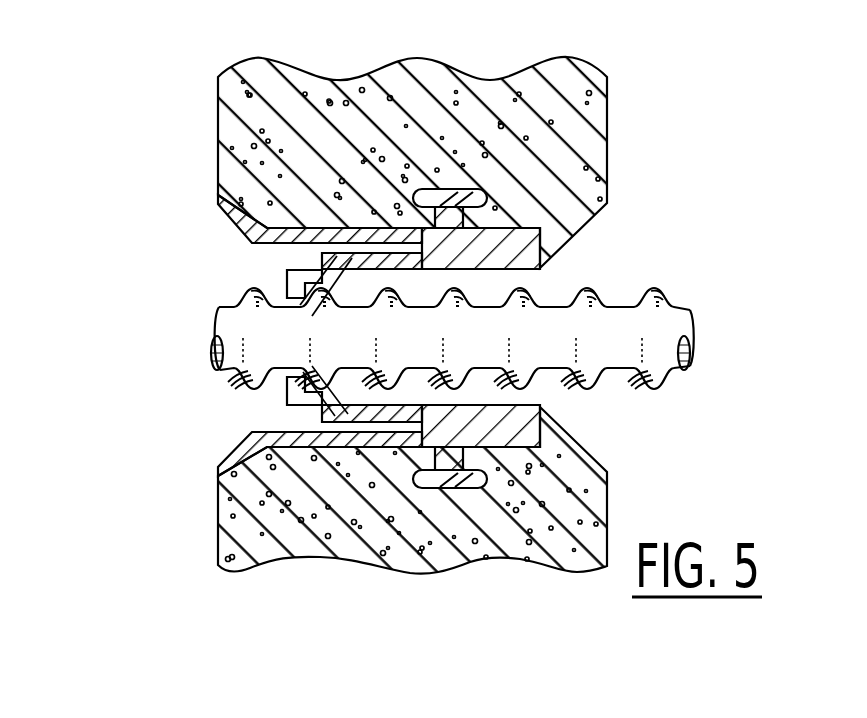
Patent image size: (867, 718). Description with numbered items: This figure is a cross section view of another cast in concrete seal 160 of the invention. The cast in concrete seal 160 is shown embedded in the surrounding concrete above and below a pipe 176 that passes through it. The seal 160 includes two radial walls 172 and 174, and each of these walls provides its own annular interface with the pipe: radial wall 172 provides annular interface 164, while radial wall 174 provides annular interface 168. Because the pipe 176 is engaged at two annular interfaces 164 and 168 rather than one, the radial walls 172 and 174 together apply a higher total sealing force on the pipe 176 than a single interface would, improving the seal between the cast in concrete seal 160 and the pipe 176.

The cast in concrete seal 160 is at (220, 205).
The radial wall 172 is at (320, 262).
The radial wall 174 is at (288, 287).
The annular interface 168 is at (300, 305).
The annular interface 164 is at (312, 316).
The pipe 176 is at (633, 300).